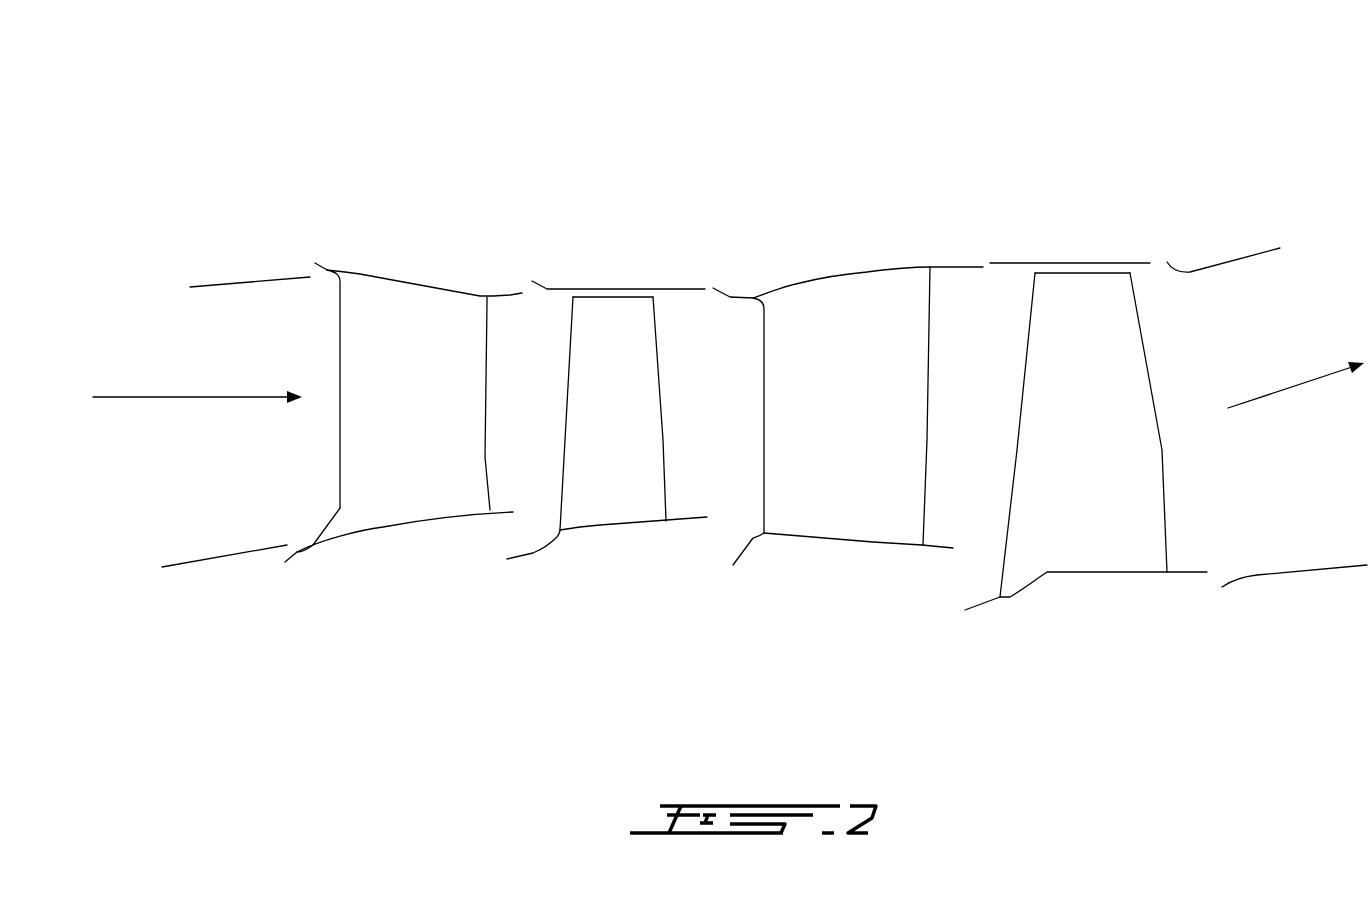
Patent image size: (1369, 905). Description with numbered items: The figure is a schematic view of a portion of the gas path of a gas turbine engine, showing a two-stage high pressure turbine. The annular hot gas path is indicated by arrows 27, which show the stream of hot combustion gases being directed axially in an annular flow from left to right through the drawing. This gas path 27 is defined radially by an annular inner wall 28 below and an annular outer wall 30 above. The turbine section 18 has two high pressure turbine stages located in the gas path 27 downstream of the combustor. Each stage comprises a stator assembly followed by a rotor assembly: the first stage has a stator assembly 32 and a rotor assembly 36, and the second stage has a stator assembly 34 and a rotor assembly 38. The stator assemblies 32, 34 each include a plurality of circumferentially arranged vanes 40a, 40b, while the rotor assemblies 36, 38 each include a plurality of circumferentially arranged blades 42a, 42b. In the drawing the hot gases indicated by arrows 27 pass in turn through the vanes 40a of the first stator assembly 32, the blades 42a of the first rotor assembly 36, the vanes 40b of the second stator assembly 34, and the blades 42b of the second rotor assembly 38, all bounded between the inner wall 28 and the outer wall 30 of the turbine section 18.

The turbine section 18 is at (640, 172).
The hot gas path 27 is at (119, 397).
The annular inner wall 28 is at (213, 560).
The annular outer wall 30 is at (1223, 267).
The stator assembly 32 is at (357, 268).
The stator assembly 34 is at (876, 553).
The rotor assembly 36 is at (601, 536).
The rotor assembly 38 is at (1100, 581).
The vane 40a is at (452, 305).
The vane 40b is at (808, 303).
The blade 42a is at (605, 327).
The blade 42b is at (1050, 298).